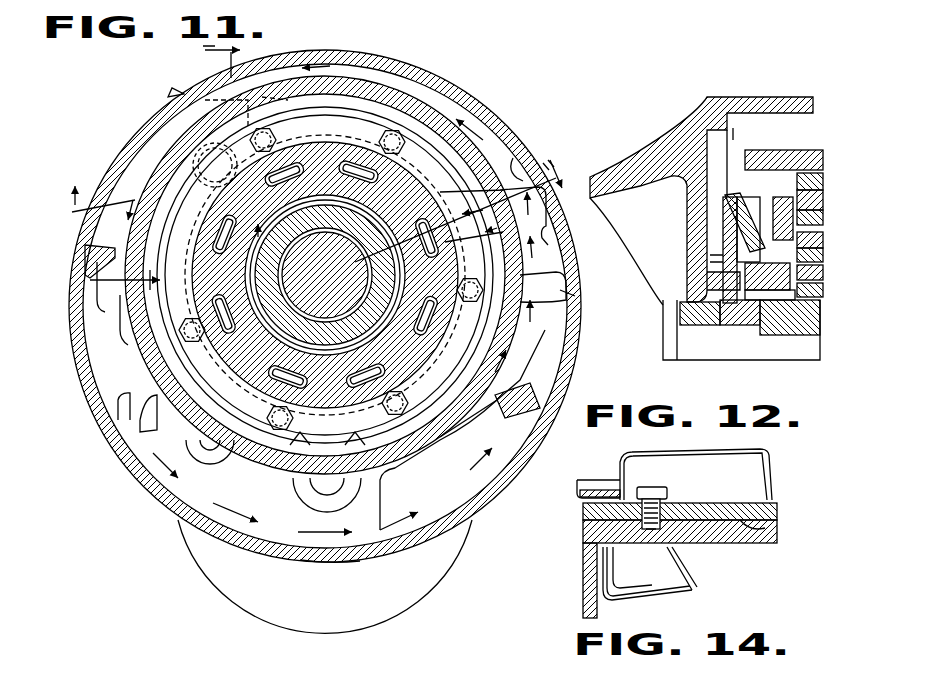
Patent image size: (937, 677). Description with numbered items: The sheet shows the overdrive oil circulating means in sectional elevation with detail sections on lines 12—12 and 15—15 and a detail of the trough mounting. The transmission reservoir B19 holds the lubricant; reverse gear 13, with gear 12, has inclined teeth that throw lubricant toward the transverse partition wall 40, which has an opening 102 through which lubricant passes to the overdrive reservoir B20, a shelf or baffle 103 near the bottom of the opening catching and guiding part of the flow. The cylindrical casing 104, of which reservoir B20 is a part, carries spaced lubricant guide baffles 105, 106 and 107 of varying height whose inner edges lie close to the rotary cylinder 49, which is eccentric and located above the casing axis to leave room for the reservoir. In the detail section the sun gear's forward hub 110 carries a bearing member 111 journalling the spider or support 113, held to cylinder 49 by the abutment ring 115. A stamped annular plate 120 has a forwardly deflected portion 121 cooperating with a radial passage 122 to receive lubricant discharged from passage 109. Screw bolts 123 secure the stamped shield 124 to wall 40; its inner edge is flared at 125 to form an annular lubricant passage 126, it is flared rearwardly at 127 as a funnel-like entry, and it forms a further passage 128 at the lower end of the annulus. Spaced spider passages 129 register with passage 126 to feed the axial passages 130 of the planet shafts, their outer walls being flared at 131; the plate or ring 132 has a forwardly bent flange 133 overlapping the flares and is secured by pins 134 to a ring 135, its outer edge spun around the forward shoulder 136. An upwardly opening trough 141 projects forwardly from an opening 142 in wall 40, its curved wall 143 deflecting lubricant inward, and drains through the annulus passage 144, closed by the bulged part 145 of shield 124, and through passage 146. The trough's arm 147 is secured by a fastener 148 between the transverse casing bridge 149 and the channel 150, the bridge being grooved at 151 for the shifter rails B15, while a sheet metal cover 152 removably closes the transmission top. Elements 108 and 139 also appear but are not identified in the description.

In FIG. 11, the gear 12 is at (464, 218).
In FIG. 11, the reverse gear 13 is at (98, 452).
In FIG. 11, the section line 15— 15 is at (172, 199).
In FIG. 12, the transverse partition wall 40 is at (740, 225).
In FIG. 11, the rotary cylinder 49 is at (573, 297).
In FIG. 11, the opening 102 is at (111, 303).
In FIG. 11, the shelf or baffle 103 is at (138, 400).
In FIG. 11, the casing 104 is at (498, 123).
In FIG. 11, the lubricant guide baffle 105 is at (532, 392).
In FIG. 11, the lubricant guide baffle 106 is at (517, 152).
In FIG. 12, the lubricant guide baffle 106 is at (765, 112).
In FIG. 11, the lubricant guide baffle 107 is at (92, 248).
In FIG. 11, the spring strip 108 is at (388, 494).
In FIG. 11, the passage 109 is at (572, 250).
In FIG. 12, the passage 109 is at (707, 108).
In FIG. 12, the forward hub 110 is at (735, 325).
In FIG. 12, the bearing member 111 is at (765, 307).
In FIG. 12, the spider or support 113 is at (811, 200).
In FIG. 12, the abutment ring 115 is at (780, 197).
In FIG. 12, the stamped annular plate 120 is at (723, 248).
In FIG. 12, the forwardly deflected portion 121 is at (712, 258).
In FIG. 12, the radial passage 122 is at (712, 278).
In FIG. 11, the screw bolts 123 is at (292, 419).
In FIG. 11, the stamped annular plate or shield 124 is at (462, 343).
In FIG. 12, the stamped annular plate or shield 124 is at (733, 150).
In FIG. 12, the flared inner edge 125 is at (810, 255).
In FIG. 12, the annular lubricant passage 126 is at (810, 272).
In FIG. 12, the rearward flare 127 is at (730, 220).
In FIG. 12, the conduit or passage 128 is at (741, 330).
In FIG. 11, the spider passages 129 is at (325, 275).
In FIG. 12, the axial passages 130 is at (770, 294).
In FIG. 12, the flares 131 is at (811, 290).
In FIG. 12, the lubricant passage forming plate or ring 132 is at (790, 150).
In FIG. 12, the forwardly bent lower annular flange 133 is at (811, 240).
In FIG. 12, the pins 134 is at (811, 217).
In FIG. 12, the ring 135 is at (788, 330).
In FIG. 12, the forward shoulder 136 is at (810, 181).
In FIG. 11, the roller slots 139 is at (200, 262).
In FIG. 11, the upwardly opening trough 141 is at (255, 111).
In FIG. 14, the upwardly opening trough 141 is at (688, 596).
In FIG. 11, the opening 142 is at (152, 119).
In FIG. 14, the curved wall 143 is at (618, 580).
In FIG. 11, the annulus passage 144 is at (135, 150).
In FIG. 11, the bulged part 145 is at (215, 165).
In FIG. 11, the passage 146 is at (325, 275).
In FIG. 14, the arm 147 is at (695, 575).
In FIG. 14, the fastener 148 is at (658, 486).
In FIG. 14, the transverse casing bridge 149 is at (770, 545).
In FIG. 14, the channel 150 is at (768, 472).
In FIG. 14, the groove 151 is at (778, 520).
In FIG. 14, the sheet metal cover 152 is at (664, 455).
In FIG. 14, the shifter rails B15 is at (770, 500).
In FIG. 11, the transmission reservoir B19 is at (222, 588).
In FIG. 11, the overdrive reservoir B20 is at (330, 562).